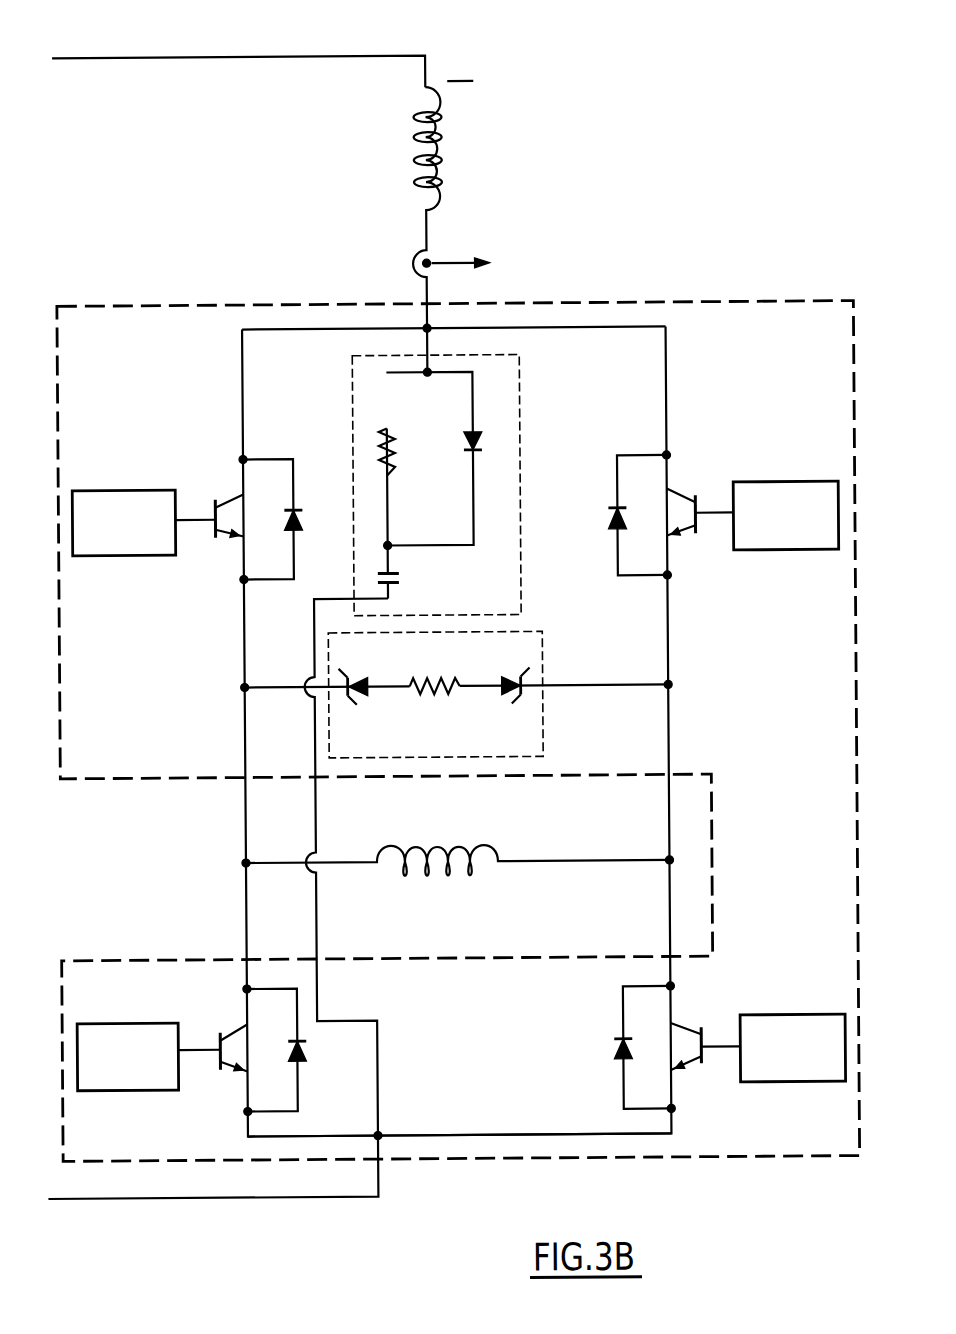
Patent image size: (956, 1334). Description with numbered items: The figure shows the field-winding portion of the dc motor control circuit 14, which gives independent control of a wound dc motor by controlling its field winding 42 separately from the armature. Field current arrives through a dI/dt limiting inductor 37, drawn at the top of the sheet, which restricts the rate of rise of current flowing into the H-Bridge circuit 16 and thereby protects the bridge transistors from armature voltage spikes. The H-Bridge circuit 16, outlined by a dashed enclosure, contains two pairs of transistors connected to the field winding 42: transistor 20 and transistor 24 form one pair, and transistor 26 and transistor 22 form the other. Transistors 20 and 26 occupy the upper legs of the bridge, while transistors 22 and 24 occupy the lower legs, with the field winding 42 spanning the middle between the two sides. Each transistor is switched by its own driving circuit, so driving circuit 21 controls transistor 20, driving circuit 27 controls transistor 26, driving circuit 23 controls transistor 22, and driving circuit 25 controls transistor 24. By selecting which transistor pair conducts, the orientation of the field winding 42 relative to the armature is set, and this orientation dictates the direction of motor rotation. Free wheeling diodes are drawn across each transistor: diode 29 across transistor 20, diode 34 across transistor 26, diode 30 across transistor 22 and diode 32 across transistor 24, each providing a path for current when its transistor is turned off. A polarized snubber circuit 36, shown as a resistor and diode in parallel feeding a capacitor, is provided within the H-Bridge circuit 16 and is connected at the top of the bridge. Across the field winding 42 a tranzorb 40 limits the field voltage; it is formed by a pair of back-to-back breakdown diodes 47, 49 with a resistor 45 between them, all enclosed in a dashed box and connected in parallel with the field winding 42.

The dc motor control circuit 14 is at (504, 47).
The dI/dt limiting inductor 37 is at (414, 138).
The H-Bridge circuit 16 is at (690, 303).
The polarized snubber circuit 36 is at (375, 355).
The transistor 20 is at (214, 535).
The free wheeling diode 29 is at (302, 508).
The driving circuit 21 is at (122, 488).
The transistor 26 is at (700, 530).
The free wheeling diode 34 is at (615, 508).
The driving circuit 27 is at (815, 484).
The tranzorb 40 is at (456, 694).
The breakdown diode 47 is at (372, 697).
The resistor 45 is at (430, 697).
The breakdown diode 49 is at (498, 696).
The field winding 42 is at (402, 887).
The transistor 22 is at (218, 1053).
The free wheeling diode 30 is at (305, 1066).
The driving circuit 23 is at (123, 1019).
The transistor 24 is at (705, 1058).
The free wheeling diode 32 is at (614, 1036).
The driving circuit 25 is at (797, 1015).